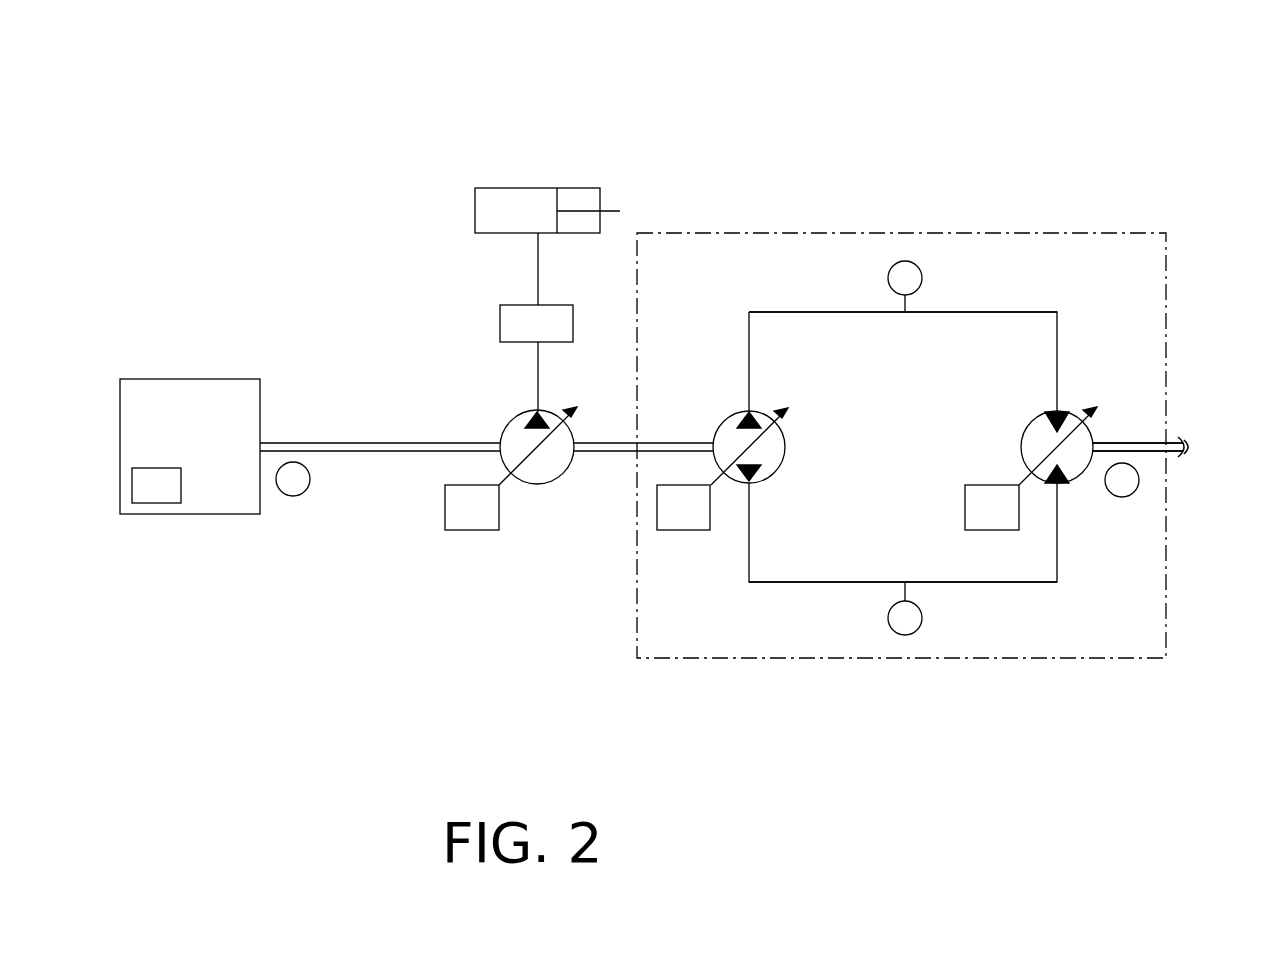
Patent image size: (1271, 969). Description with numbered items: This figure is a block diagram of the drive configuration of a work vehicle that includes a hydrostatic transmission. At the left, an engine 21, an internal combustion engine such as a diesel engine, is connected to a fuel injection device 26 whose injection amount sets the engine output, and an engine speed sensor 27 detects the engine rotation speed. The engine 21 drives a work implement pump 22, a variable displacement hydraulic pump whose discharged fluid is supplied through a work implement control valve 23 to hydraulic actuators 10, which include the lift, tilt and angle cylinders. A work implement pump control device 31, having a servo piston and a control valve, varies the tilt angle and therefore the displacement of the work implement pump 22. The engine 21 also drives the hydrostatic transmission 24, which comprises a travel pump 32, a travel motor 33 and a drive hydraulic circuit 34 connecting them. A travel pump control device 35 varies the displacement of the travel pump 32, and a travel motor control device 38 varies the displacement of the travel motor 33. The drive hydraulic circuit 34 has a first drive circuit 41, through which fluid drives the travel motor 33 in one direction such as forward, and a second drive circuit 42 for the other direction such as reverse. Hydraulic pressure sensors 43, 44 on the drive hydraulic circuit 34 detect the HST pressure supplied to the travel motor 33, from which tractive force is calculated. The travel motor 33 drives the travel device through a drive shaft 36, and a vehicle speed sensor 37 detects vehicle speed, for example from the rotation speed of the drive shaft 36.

The hydraulic actuators 10 is at (520, 188).
The engine 21 is at (168, 379).
The work implement pump 22 is at (548, 486).
The work implement control valve 23 is at (500, 322).
The hydrostatic transmission 24 is at (708, 233).
The fuel injection device 26 is at (155, 503).
The engine speed sensor 27 is at (293, 496).
The work implement pump control device 31 is at (474, 530).
The travel pump 32 is at (728, 415).
The travel motor 33 is at (1040, 415).
The drive hydraulic circuit 34 is at (830, 304).
The travel pump control device 35 is at (675, 530).
The drive shaft 36 is at (1139, 442).
The vehicle speed sensor 37 is at (1122, 497).
The travel motor control device 38 is at (983, 483).
The first drive circuit 41 is at (990, 312).
The second drive circuit 42 is at (1011, 582).
The hydraulic pressure sensor 43 is at (908, 279).
The hydraulic pressure sensor 44 is at (905, 635).